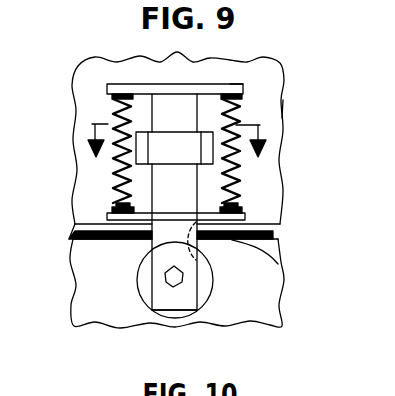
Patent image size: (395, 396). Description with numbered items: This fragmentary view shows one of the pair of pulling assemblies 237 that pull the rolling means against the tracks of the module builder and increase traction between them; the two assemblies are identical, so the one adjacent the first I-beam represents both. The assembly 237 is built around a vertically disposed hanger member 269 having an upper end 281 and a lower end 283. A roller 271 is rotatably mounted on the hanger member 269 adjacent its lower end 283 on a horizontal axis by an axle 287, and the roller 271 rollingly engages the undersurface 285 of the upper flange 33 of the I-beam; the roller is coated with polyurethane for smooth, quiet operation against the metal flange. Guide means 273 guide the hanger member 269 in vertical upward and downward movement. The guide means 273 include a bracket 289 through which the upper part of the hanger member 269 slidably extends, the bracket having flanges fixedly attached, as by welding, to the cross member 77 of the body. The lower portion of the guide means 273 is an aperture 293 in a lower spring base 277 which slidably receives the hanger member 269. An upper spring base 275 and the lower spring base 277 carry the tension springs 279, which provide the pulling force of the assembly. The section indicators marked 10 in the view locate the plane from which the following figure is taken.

The section line for FIG. 10 is at (176, 160).
The upper flange 33 is at (272, 235).
The cross member 77 is at (280, 146).
The assembly 237 is at (293, 106).
The hanger member 269 is at (151, 243).
The roller 271 is at (207, 315).
The guide means 273 is at (179, 118).
The upper spring base 275 is at (238, 86).
The lower spring base 277 is at (107, 232).
The tension springs 279 is at (116, 190).
The upper end 281 is at (160, 100).
The lower end 283 is at (162, 293).
The undersurface 285 is at (278, 264).
The axle 287 is at (173, 287).
The bracket 289 is at (158, 150).
The aperture 293 is at (212, 257).